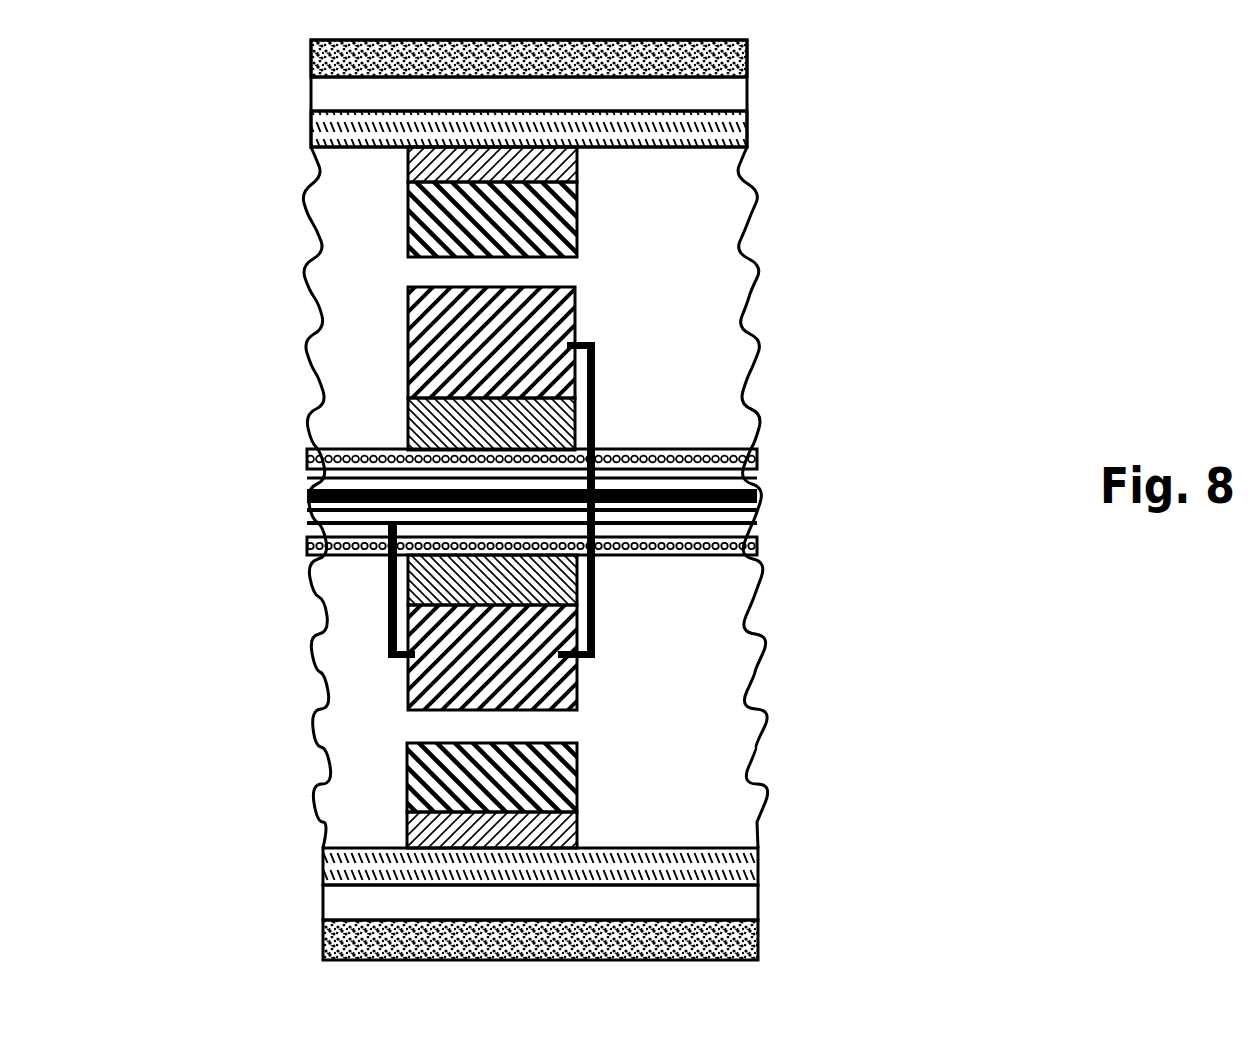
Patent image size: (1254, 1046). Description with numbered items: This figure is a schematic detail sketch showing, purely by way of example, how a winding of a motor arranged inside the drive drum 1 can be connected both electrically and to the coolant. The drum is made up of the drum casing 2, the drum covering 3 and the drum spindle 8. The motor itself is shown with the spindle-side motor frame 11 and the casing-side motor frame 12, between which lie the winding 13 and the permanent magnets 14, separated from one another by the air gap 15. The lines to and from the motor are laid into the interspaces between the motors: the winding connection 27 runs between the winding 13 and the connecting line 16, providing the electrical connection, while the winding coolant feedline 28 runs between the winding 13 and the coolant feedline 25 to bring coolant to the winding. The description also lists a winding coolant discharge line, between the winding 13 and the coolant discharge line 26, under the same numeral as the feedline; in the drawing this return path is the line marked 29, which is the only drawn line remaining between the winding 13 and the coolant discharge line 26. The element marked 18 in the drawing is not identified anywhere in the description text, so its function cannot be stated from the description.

The drive drum 1 is at (132, 828).
The drum casing 2 is at (693, 131).
The drum covering 3 is at (343, 93).
The drum spindle 8 is at (758, 467).
The spindle-side motor frame 11 is at (440, 412).
The casing-side motor frame 12 is at (440, 160).
The winding 13 is at (455, 343).
The permanent magnets 14 is at (470, 215).
The air gap 15 is at (558, 273).
The connecting line 16 is at (333, 482).
The substrate 18 is at (712, 60).
The coolant feedline 25 is at (307, 512).
The coolant discharge line 26 is at (307, 542).
The winding connection 27 is at (598, 378).
The winding coolant feedline 28 is at (598, 608).
The contact 29 is at (387, 623).